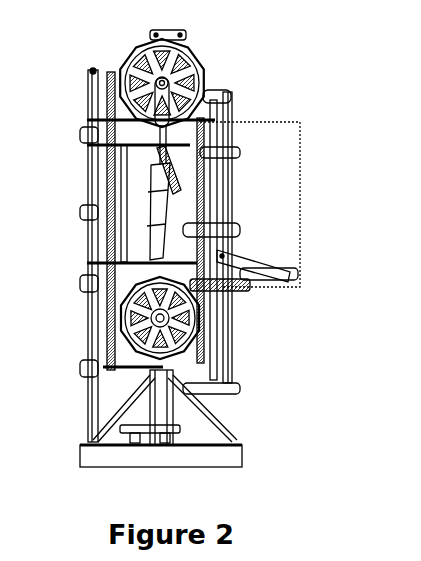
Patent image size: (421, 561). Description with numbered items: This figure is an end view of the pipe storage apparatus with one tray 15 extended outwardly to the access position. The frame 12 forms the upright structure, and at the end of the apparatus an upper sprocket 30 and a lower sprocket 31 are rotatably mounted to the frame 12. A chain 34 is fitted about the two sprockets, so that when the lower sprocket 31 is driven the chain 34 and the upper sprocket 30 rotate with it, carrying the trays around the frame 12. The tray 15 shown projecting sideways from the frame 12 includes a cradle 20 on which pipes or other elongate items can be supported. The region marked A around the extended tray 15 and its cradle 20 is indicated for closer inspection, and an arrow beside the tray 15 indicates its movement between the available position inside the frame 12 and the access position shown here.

The frame 12 is at (98, 345).
The tray 15 is at (268, 245).
The cradle 20 is at (270, 276).
The upper sprocket 30 is at (112, 78).
The lower sprocket 31 is at (112, 313).
The chain 34 is at (110, 183).
The detail region A is at (300, 122).